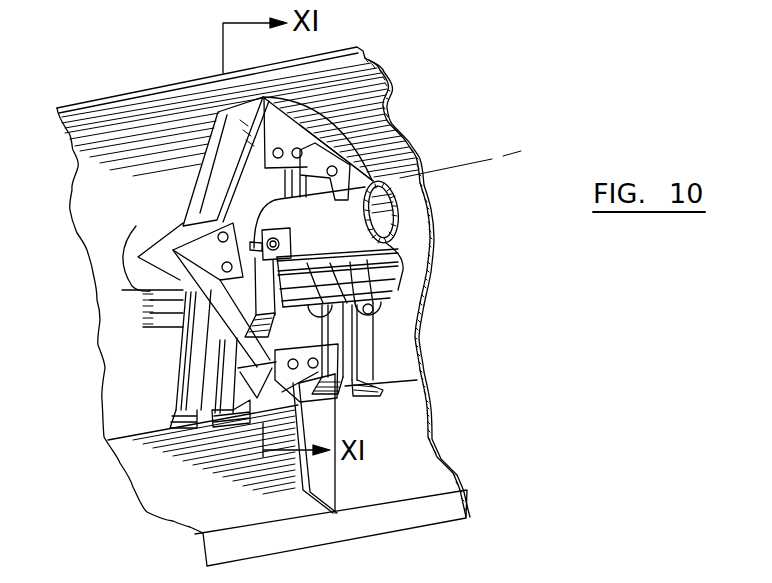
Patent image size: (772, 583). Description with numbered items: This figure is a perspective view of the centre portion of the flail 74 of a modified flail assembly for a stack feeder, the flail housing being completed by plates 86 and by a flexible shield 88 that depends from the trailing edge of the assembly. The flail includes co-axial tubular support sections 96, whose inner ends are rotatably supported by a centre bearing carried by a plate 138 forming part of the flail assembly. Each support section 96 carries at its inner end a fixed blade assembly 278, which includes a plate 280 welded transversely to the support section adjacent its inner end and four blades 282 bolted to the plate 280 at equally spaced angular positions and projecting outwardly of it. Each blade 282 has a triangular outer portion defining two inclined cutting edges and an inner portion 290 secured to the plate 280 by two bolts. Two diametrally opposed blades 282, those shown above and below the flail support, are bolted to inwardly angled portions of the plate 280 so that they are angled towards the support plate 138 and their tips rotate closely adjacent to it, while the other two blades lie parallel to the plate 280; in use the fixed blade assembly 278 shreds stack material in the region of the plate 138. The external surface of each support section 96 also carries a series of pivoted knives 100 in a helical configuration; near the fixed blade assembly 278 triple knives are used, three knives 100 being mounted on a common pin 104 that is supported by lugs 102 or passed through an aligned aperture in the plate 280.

The flail 74 is at (358, 96).
The plates 86 is at (434, 479).
The flexible shield 88 is at (313, 533).
The tubular support section 96 is at (328, 234).
The pivoted knife 100 is at (321, 312).
The lug 102 is at (383, 306).
The pin 104 is at (382, 312).
The support plate 138 is at (325, 483).
The fixed blade assembly 278 is at (355, 153).
The plate 280 is at (245, 198).
The blade 282 is at (277, 137).
The inner portion 290 is at (183, 224).